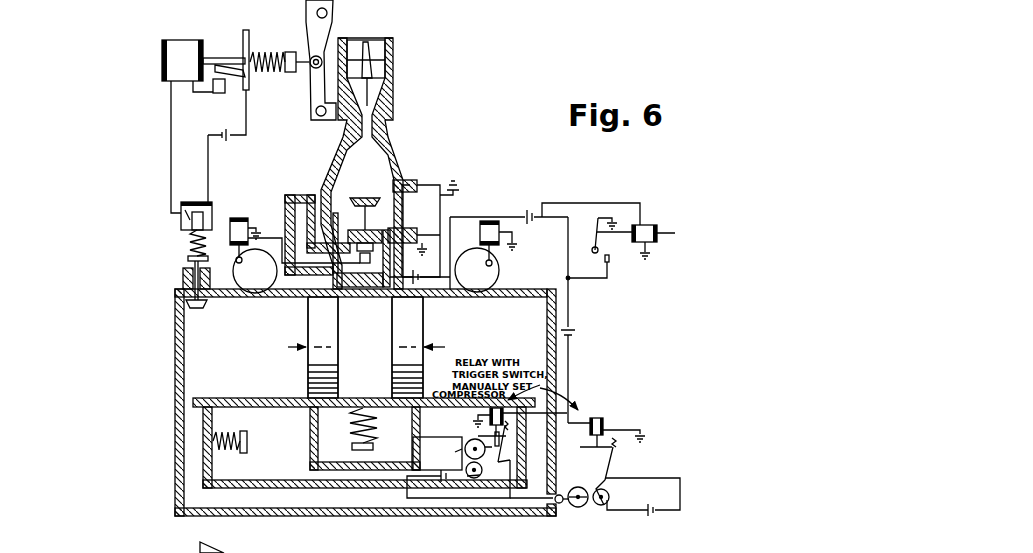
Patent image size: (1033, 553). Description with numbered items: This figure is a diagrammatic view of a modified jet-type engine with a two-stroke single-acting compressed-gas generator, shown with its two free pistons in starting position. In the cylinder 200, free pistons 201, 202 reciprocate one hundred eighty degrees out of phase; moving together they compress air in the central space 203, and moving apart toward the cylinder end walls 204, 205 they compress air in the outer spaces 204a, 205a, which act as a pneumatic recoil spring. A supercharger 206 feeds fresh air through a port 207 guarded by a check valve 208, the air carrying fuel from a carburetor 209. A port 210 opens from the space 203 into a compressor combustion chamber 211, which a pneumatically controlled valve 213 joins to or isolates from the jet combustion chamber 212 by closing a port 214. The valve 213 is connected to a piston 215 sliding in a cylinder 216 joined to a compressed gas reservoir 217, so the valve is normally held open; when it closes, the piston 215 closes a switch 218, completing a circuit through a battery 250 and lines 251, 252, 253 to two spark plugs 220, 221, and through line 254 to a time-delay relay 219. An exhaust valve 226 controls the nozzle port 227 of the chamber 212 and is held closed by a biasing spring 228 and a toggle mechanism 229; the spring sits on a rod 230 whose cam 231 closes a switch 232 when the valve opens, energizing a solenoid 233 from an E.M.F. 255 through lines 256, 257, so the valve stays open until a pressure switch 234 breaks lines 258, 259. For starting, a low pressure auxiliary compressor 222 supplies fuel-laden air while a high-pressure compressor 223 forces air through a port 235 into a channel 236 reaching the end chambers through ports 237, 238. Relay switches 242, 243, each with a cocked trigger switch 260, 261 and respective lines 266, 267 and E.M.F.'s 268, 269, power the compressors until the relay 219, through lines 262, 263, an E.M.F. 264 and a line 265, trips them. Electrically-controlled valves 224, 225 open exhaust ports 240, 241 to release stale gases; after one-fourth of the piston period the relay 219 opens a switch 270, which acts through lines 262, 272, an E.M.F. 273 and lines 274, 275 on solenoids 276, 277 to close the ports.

The cylinder 200 is at (255, 405).
The free piston 201 is at (423, 312).
The free piston 202 is at (315, 336).
The space 203 is at (354, 350).
The cylinder end wall 204 is at (543, 340).
The space 204a is at (456, 337).
The cylinder end wall 205 is at (203, 345).
The recoil chamber 205a is at (262, 377).
The supercharger 206 is at (366, 478).
The port 207 is at (377, 406).
The check valve 208 is at (350, 410).
The carburetor 209 is at (413, 462).
The port 210 is at (365, 297).
The compressor combustion chamber 211 is at (392, 297).
The jet combustion chamber 212 is at (378, 136).
The pneumatically controlled valve 213 is at (335, 175).
The port 214 is at (330, 195).
The piston 215 is at (350, 228).
The cylinder 216 is at (308, 235).
The compressed gas reservoir 217 is at (285, 192).
The switch 218 is at (355, 263).
The time-delay relay 219 is at (650, 225).
The spark plug 220 is at (372, 198).
The spark plug 221 is at (410, 180).
The low pressure auxiliary compressor 222 is at (466, 442).
The auxiliary high-pressure compressor 223 is at (578, 508).
The solenoid valve 224 is at (212, 280).
The solenoid valve 225 is at (497, 278).
The exhaust valve 226 is at (385, 73).
The nozzle port 227 is at (393, 94).
The biasing spring 228 is at (262, 52).
The toggle mechanism 229 is at (333, 23).
The rod 230 is at (243, 56).
The cam 231 is at (230, 93).
The switch 232 is at (219, 93).
The solenoid 233 is at (178, 40).
The pressure switch 234 is at (190, 205).
The port 235 is at (545, 506).
The channel 236 is at (312, 500).
The port 237 is at (550, 400).
The port 238 is at (188, 400).
The exhaust port 240 is at (458, 298).
The exhaust port 241 is at (258, 303).
The relay switch 242 is at (490, 411).
The relay switch 243 is at (603, 420).
The battery 250 is at (418, 268).
The line 251 is at (372, 284).
The line 252 is at (441, 235).
The line 253 is at (458, 190).
The line 254 is at (588, 203).
The E.M.F. 255 is at (228, 142).
The line 256 is at (245, 116).
The line 257 is at (186, 94).
The line 258 is at (171, 172).
The line 259 is at (208, 174).
The trigger switch 260 is at (508, 438).
The trigger switch 261 is at (615, 450).
The line 262 is at (608, 265).
The line 263 is at (570, 300).
The E.M.F. 264 is at (575, 332).
The line 265 is at (570, 372).
The line 266 is at (460, 506).
The line 267 is at (650, 468).
The E.M.F. 268 is at (438, 506).
The E.M.F. 269 is at (650, 512).
The switch 270 is at (594, 253).
The line 272 is at (568, 247).
The E.M.F. 273 is at (545, 206).
The line 274 is at (527, 210).
The line 275 is at (512, 228).
The solenoid 276 is at (492, 221).
The solenoid 277 is at (238, 218).